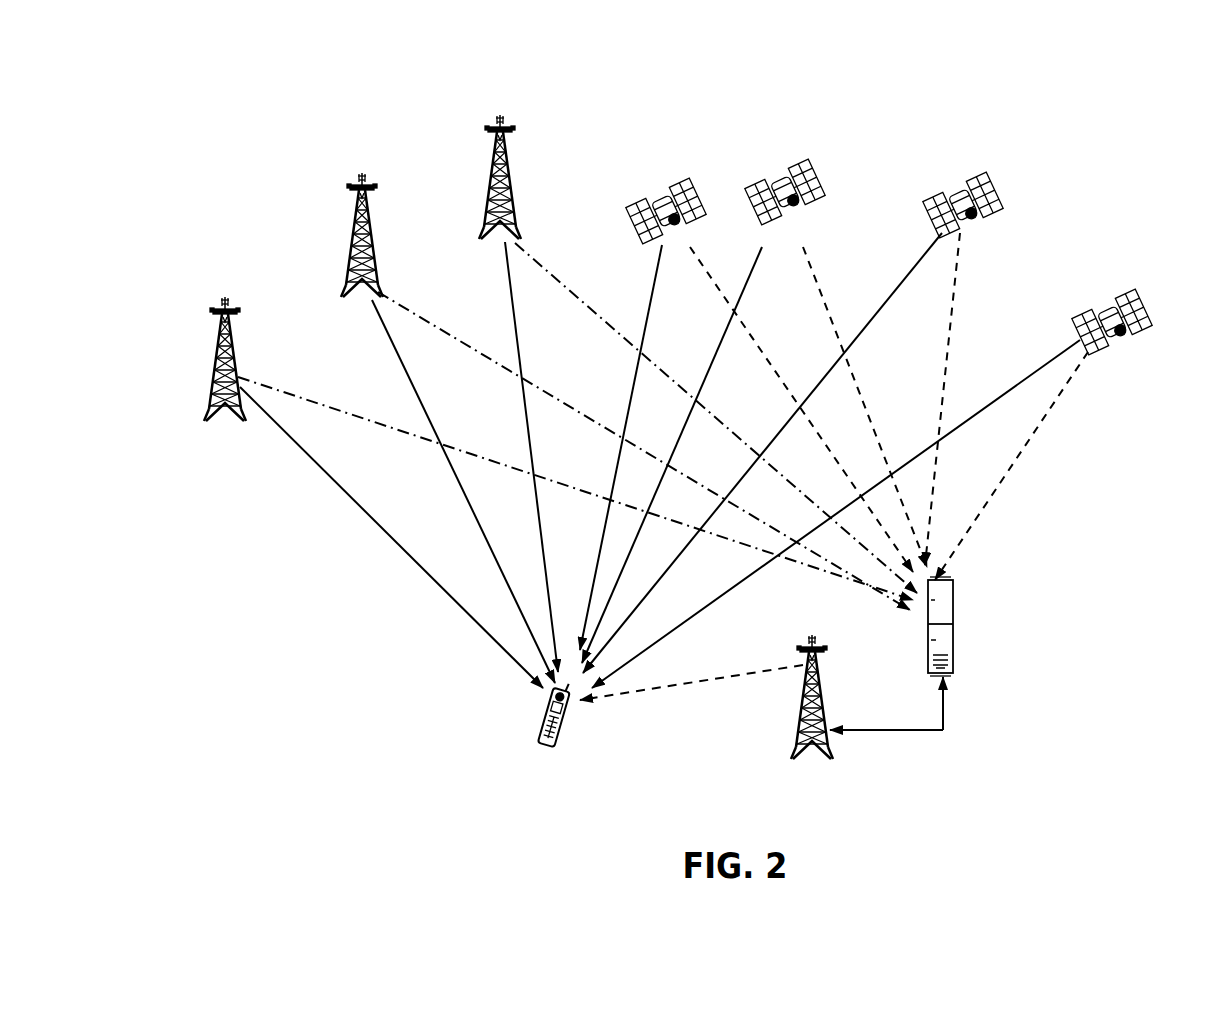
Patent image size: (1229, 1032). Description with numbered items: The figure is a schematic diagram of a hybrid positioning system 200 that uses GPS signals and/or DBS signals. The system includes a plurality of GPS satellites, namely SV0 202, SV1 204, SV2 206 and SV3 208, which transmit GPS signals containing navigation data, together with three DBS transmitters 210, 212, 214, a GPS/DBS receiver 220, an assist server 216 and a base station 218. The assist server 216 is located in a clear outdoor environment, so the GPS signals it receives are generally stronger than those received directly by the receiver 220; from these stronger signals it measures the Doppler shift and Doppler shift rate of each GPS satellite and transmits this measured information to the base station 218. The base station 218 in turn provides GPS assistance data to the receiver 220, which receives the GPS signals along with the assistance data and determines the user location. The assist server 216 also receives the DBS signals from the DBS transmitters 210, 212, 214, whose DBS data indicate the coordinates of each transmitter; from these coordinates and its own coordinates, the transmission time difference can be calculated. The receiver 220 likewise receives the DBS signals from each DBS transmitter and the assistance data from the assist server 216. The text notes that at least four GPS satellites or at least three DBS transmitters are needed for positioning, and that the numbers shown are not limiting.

The hybrid positioning system 200 is at (172, 133).
The GPS satellite SV0 202 is at (678, 190).
The GPS satellite SV1 204 is at (813, 193).
The GPS satellite SV2 206 is at (990, 203).
The GPS satellite SV3 208 is at (1142, 322).
The DBS transmitter 0 210 is at (232, 365).
The DBS transmitter 1 212 is at (370, 240).
The DBS transmitter 2 214 is at (508, 192).
The assist server 216 is at (955, 590).
The base station 218 is at (820, 700).
The GPS/DBS receiver 220 is at (560, 735).